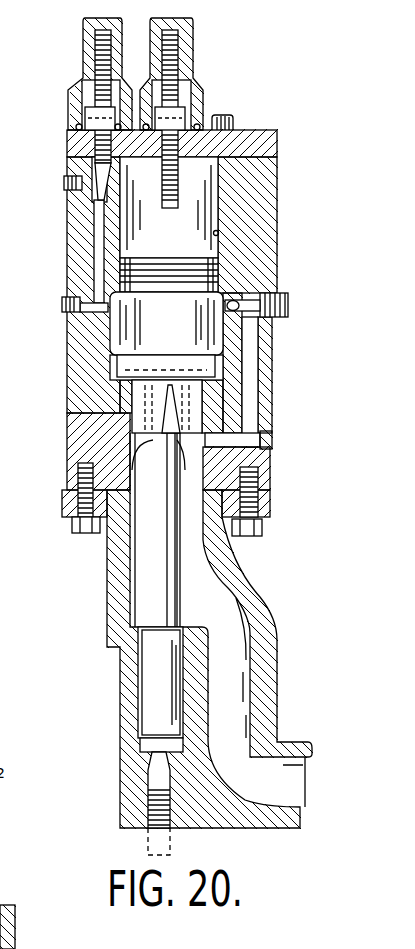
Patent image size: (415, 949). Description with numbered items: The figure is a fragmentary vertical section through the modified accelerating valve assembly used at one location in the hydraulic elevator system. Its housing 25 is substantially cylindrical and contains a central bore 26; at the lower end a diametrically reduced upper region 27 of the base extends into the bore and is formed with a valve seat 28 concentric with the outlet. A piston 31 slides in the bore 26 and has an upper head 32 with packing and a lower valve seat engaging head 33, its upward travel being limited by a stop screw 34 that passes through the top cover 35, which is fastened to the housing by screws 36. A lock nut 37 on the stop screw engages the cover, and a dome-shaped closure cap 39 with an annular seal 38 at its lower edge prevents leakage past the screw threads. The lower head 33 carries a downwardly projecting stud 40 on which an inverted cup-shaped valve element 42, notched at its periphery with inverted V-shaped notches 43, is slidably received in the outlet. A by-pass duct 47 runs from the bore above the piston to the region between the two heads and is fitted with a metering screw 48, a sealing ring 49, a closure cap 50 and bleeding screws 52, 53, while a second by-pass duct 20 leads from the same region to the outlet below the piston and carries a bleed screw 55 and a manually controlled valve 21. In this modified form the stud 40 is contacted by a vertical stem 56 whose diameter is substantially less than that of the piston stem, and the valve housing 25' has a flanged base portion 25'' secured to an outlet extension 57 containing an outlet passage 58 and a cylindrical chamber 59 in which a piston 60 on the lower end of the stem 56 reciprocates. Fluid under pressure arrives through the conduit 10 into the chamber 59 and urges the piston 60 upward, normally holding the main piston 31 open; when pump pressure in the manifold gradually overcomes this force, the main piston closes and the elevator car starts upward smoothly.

The conduit 10 is at (145, 842).
The by-pass duct 20 is at (253, 375).
The manually controlled valve 21 is at (290, 302).
The housing 25 is at (189, 303).
The valve housing 25' is at (260, 481).
The flanged base portion 25'' is at (274, 522).
The central bore 26 is at (220, 232).
The diametrically reduced upper region 27 is at (220, 392).
The valve seat 28 is at (273, 382).
The piston 31 is at (160, 328).
The upper head 32 is at (118, 268).
The lower valve seat engaging head 33 is at (271, 321).
The stop screw 34 is at (165, 212).
The top cover 35 is at (278, 141).
The screws 36 is at (237, 116).
The lock nut 37 is at (176, 102).
The annular seal 38 is at (198, 122).
The dome-shaped closure cap 39 is at (194, 54).
The stud 40 is at (170, 447).
The inverted cup-shaped valve element 42 is at (67, 448).
The inverted V-shaped notches 43 is at (80, 472).
The by-pass duct 47 is at (97, 230).
The metering screw 48 is at (87, 162).
The sealing ring 49 is at (70, 125).
The closure cap 50 is at (80, 52).
The bleeding screw 52 is at (67, 183).
The bleeding screw 53 is at (63, 307).
The bleed screw 55 is at (273, 440).
The vertical stem 56 is at (163, 563).
The outlet extension 57 is at (278, 637).
The outlet passage 58 is at (237, 682).
The cylindrical chamber 59 is at (140, 672).
The piston 60 is at (157, 697).